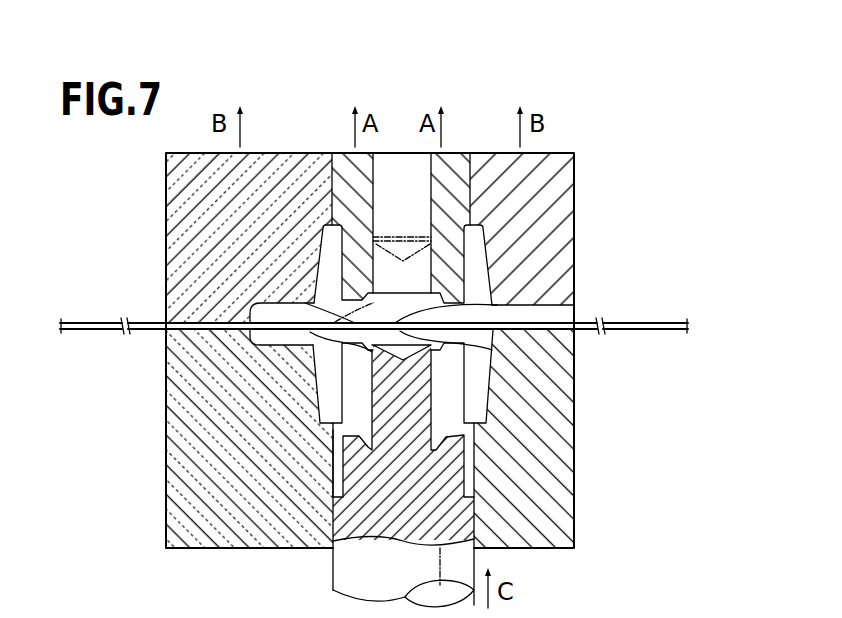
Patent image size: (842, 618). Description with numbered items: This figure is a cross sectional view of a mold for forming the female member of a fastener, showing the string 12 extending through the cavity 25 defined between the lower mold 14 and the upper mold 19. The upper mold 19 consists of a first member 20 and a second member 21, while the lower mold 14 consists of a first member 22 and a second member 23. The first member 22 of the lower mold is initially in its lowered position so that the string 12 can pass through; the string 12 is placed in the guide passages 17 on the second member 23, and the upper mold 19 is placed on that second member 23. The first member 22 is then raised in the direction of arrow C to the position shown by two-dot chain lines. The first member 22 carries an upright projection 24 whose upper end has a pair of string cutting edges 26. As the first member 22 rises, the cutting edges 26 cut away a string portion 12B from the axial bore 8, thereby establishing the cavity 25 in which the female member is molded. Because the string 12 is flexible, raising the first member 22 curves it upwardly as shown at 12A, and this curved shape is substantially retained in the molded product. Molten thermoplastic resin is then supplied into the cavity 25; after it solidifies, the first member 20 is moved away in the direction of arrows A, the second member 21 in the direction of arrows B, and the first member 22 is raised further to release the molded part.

The axial bore 8 is at (540, 318).
The string 12 is at (150, 321).
The curved string portion 12A is at (305, 300).
The string portion 12B is at (403, 237).
The lower mold 14 is at (584, 460).
The guide passages 17 is at (215, 343).
The upper mold 19 is at (584, 207).
The first member of the upper mold 20 is at (348, 163).
The second member of the upper mold 21 is at (183, 197).
The first member of the lower mold 22 is at (477, 555).
The second member of the lower mold 23 is at (188, 477).
The upright projection 24 is at (333, 430).
The cavity 25 is at (245, 348).
The string cutting edges 26 is at (313, 345).